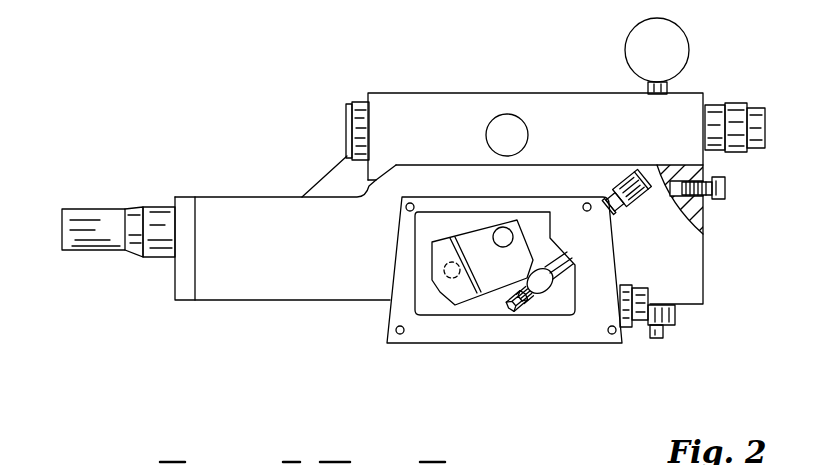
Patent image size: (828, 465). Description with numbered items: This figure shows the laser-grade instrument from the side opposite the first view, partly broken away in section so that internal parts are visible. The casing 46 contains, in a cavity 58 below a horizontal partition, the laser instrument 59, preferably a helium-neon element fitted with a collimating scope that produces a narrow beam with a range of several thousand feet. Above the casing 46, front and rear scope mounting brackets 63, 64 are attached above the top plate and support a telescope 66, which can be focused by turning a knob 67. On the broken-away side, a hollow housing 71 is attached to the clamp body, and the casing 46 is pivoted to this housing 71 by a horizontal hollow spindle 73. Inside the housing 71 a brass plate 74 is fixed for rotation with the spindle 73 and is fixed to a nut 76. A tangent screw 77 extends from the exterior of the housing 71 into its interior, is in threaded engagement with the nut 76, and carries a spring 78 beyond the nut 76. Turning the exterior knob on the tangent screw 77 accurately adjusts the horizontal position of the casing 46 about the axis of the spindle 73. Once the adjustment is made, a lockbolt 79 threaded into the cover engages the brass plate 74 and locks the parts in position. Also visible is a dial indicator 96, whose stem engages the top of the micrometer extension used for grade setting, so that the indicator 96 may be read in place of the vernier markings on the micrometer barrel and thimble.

The casing 46 is at (285, 247).
The cavity 58 is at (702, 210).
The laser instrument 59 is at (152, 212).
The front scope mounting bracket 63 is at (702, 170).
The rear scope mounting bracket 64 is at (393, 104).
The telescope 66 is at (346, 112).
The knob 67 is at (514, 138).
The hollow housing 71 is at (582, 327).
The horizontal hollow spindle 73 is at (499, 232).
The brass plate 74 is at (500, 287).
The nut 76 is at (543, 300).
The tangent screw 77 is at (646, 204).
The spring 78 is at (530, 310).
The lockbolt 79 is at (446, 266).
The dial indicator 96 is at (643, 38).